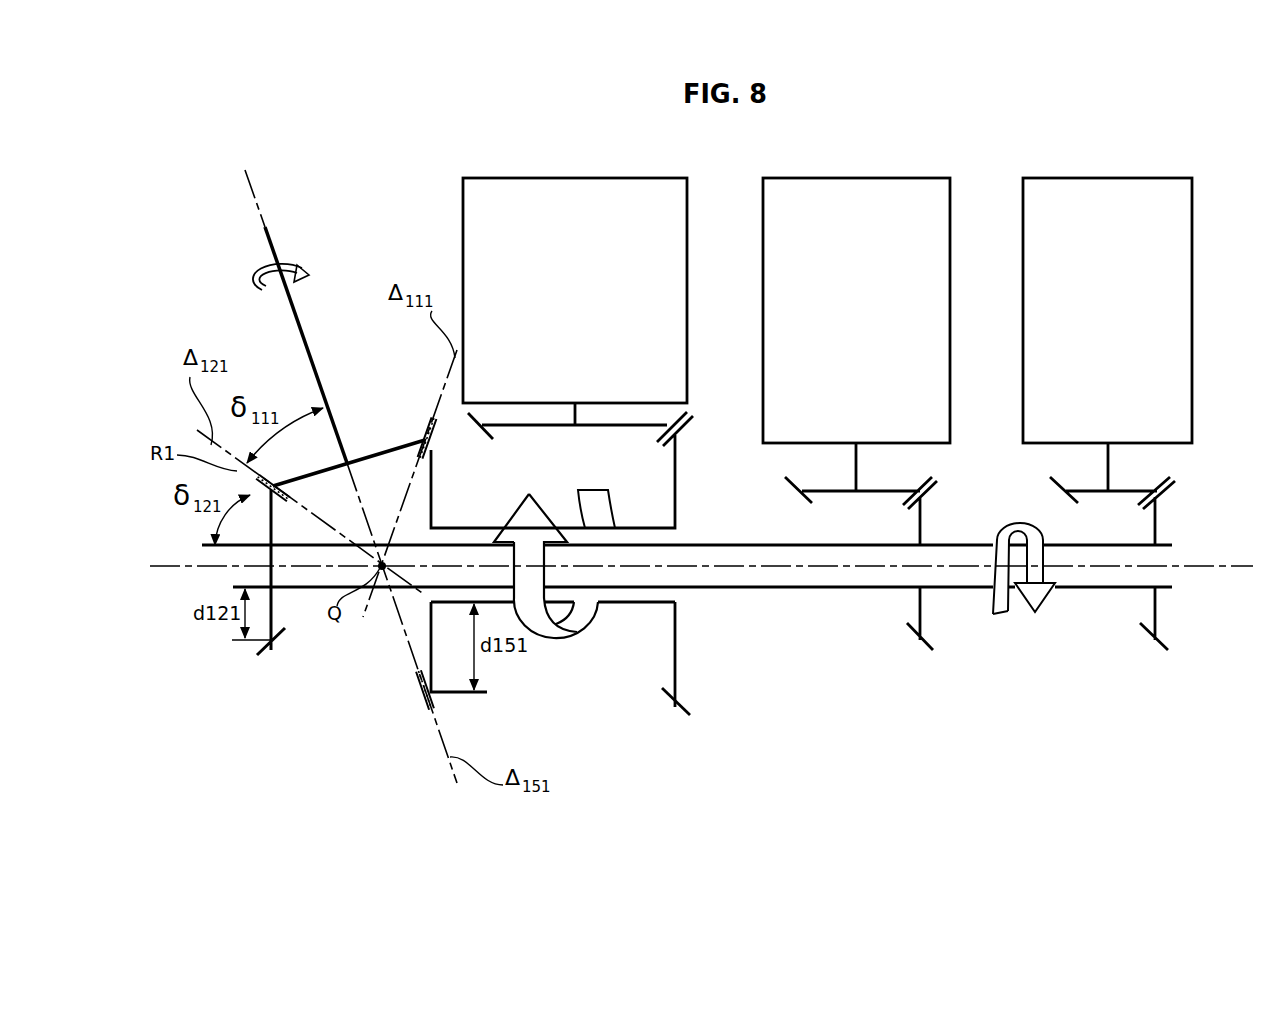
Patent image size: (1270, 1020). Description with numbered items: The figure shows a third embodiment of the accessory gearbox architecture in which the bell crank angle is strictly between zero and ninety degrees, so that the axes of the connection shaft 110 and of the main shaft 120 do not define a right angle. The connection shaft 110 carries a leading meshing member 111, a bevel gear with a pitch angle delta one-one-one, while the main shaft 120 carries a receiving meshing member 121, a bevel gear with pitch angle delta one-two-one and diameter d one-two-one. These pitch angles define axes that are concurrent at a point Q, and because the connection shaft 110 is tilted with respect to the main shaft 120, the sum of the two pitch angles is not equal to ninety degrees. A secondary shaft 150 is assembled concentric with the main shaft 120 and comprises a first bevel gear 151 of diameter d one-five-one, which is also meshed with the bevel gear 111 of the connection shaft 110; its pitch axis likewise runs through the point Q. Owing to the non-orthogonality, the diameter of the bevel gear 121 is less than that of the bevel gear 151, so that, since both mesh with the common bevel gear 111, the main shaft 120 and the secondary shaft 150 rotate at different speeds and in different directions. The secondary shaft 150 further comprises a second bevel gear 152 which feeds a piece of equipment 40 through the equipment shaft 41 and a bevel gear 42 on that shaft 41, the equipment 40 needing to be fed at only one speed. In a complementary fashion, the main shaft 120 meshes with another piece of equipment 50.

The piece of equipment 40 is at (576, 175).
The equipment shaft 41 is at (573, 415).
The bevel gear 42 is at (487, 442).
The piece of equipment 50 is at (857, 175).
The connection shaft 110 is at (310, 354).
The leading meshing member 111 is at (380, 444).
The main shaft 120 is at (1085, 589).
The receiving meshing member 121 is at (263, 653).
The secondary shaft 150 is at (621, 603).
The first bevel gear 151 is at (434, 700).
The second bevel gear 152 is at (678, 705).